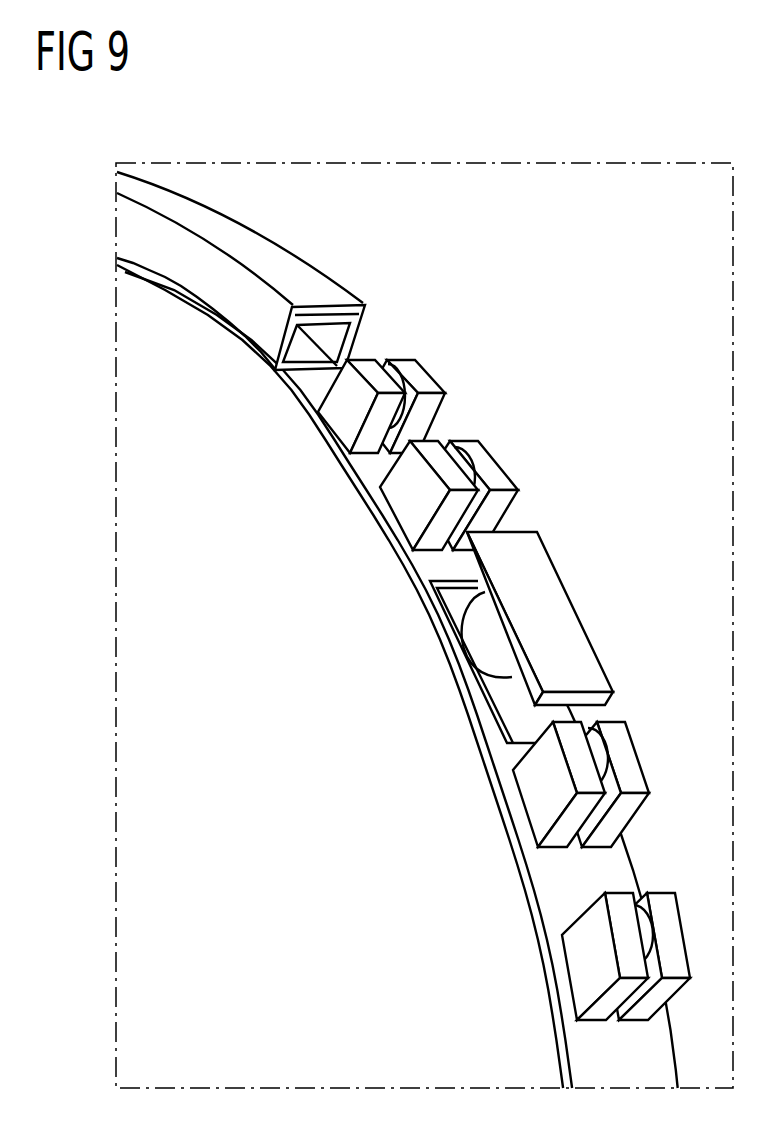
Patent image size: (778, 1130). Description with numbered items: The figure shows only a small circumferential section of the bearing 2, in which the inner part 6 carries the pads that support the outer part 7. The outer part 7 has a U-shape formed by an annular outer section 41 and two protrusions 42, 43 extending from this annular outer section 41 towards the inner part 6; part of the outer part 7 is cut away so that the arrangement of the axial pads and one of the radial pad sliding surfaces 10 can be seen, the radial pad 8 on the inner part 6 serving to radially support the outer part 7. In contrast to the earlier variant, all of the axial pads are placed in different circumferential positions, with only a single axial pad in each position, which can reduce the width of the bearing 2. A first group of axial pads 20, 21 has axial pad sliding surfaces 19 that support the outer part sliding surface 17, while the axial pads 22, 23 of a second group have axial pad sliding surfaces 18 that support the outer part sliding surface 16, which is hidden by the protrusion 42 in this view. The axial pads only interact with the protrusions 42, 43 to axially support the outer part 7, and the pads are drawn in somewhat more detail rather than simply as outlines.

The bearing 2 is at (405, 676).
The inner part 6 is at (622, 863).
The outer part 7 is at (251, 235).
The radial pad 8 is at (600, 698).
The radial pad sliding surface 10 is at (571, 621).
The outer part sliding surface 16 is at (300, 362).
The outer part sliding surface 17 is at (334, 343).
The axial pad sliding surface 18 is at (412, 502).
The axial pad sliding surface 19 is at (400, 410).
The axial pad 20 is at (447, 412).
The axial pad 21 is at (625, 753).
The axial pad 22 is at (503, 467).
The axial pad 23 is at (588, 967).
The annular outer section 41 is at (303, 280).
The protrusion 42 is at (210, 285).
The protrusion 43 is at (355, 330).